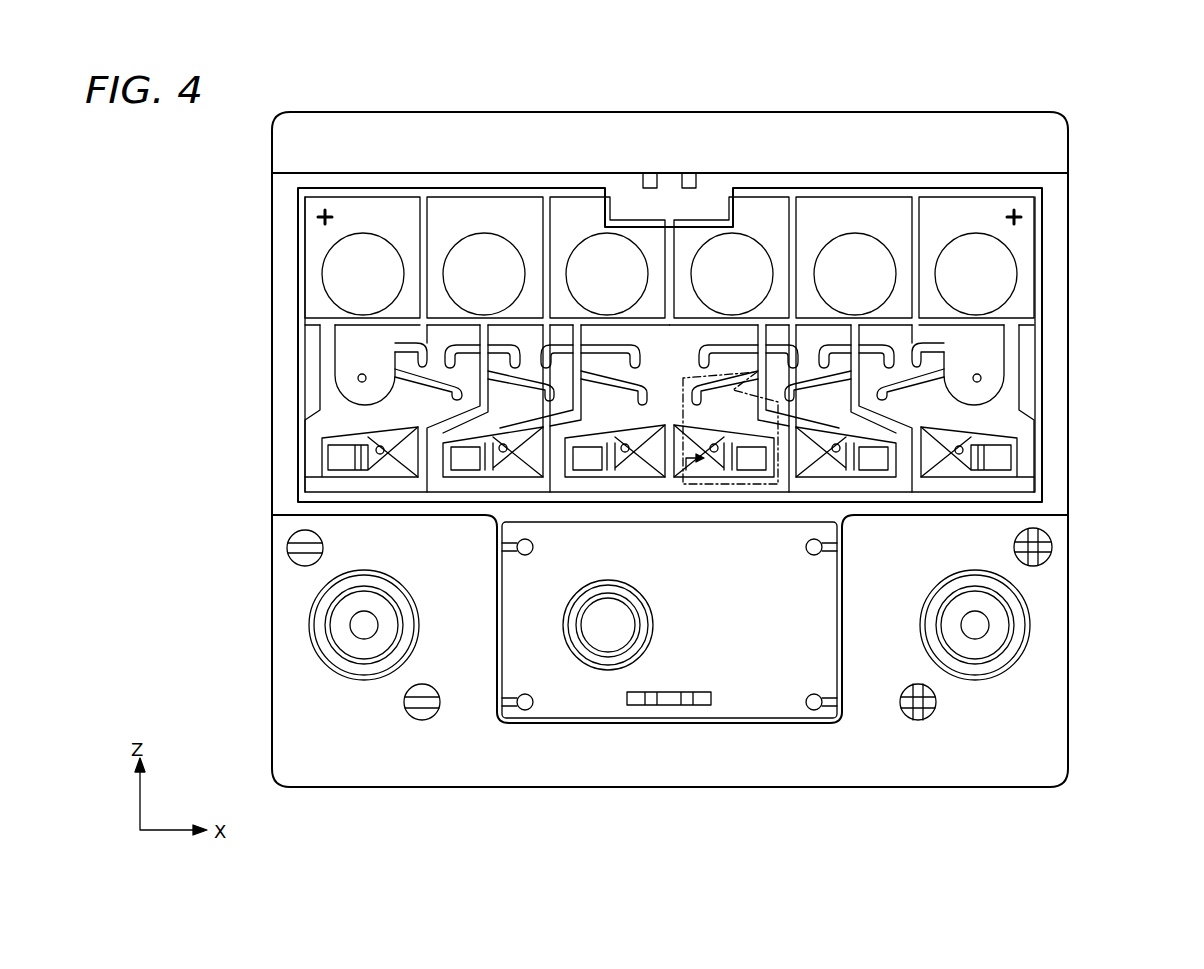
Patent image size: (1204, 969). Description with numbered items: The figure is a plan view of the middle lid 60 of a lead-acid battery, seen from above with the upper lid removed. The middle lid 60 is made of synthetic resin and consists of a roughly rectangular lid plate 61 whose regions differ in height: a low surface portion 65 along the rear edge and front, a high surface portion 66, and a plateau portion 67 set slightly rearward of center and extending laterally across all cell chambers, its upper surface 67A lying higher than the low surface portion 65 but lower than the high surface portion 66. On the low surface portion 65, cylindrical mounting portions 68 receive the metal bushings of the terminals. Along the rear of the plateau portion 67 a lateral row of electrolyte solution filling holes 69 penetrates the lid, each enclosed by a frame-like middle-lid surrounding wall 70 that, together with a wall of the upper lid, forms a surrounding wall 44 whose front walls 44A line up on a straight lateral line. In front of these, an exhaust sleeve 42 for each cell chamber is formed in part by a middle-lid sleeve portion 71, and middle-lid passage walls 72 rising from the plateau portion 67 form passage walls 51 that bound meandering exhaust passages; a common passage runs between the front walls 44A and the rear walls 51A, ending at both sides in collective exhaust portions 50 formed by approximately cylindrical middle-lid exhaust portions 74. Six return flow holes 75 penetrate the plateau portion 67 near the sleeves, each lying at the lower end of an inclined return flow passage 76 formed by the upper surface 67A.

The middle lid 60 is at (741, 281).
The lid plate 61 is at (767, 100).
The low surface portion 65 is at (1053, 662).
The high surface portion 66 is at (750, 712).
The plateau portion 67 is at (905, 182).
The upper surface of the plateau portion 67A is at (1042, 335).
The cylindrical mounting portion 68 is at (327, 643).
The electrolyte solution filling hole 69 is at (595, 250).
The middle-lid surrounding wall 70 is at (720, 184).
The surrounding wall 44 is at (720, 184).
The front wall of the surrounding wall 44A is at (658, 323).
The middle-lid sleeve portion 71 is at (666, 637).
The exhaust sleeve 42 is at (325, 455).
The middle-lid passage wall 72 is at (676, 442).
The passage wall 51 is at (485, 357).
The rear wall of the passage wall 51A is at (878, 345).
The middle-lid exhaust portion 74 is at (671, 408).
The collective exhaust portion 50 is at (333, 374).
The return flow hole 75 is at (380, 455).
The return flow passage 76 is at (428, 455).